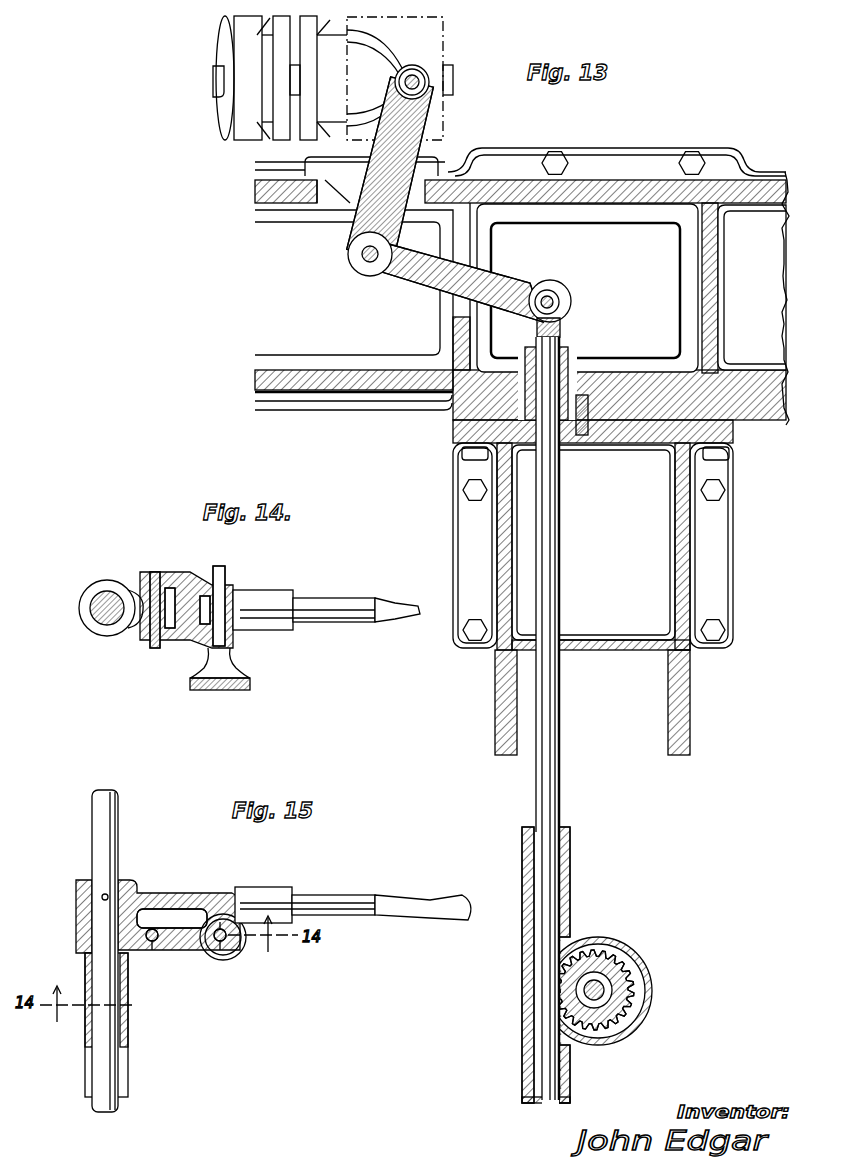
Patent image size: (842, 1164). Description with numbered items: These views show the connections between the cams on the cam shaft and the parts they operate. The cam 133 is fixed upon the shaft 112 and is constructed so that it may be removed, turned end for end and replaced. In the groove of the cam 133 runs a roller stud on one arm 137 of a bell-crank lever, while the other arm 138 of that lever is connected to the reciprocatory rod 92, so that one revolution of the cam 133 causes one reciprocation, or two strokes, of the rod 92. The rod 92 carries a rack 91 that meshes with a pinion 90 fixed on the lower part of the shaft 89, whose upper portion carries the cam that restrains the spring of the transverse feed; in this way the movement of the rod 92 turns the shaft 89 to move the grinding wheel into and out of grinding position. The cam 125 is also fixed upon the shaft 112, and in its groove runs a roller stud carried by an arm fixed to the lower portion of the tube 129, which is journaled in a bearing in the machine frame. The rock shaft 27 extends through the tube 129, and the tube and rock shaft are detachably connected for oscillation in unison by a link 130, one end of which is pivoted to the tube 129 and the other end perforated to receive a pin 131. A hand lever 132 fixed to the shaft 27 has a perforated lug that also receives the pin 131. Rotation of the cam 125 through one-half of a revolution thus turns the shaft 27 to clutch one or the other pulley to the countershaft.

In FIG. 13, the cam 125 is at (222, 20).
In FIG. 13, the cam 133 is at (446, 45).
In FIG. 13, the shaft 112 is at (446, 84).
In FIG. 13, the arm of bell-crank lever 137 is at (420, 122).
In FIG. 13, the arm of bell-crank lever 138 is at (505, 280).
In FIG. 13, the reciprocatory rod 92 is at (553, 782).
In FIG. 13, the pinion 90 is at (628, 970).
In FIG. 13, the shaft 89 is at (600, 991).
In FIG. 13, the rack 91 is at (562, 1066).
In FIG. 14, the tube 129 is at (84, 597).
In FIG. 15, the tube 129 is at (95, 1067).
In FIG. 14, the rock shaft 27 is at (112, 596).
In FIG. 15, the rock shaft 27 is at (122, 816).
In FIG. 14, the link 130 is at (188, 586).
In FIG. 15, the link 130 is at (180, 944).
In FIG. 14, the pin 131 is at (213, 692).
In FIG. 15, the pin 131 is at (222, 960).
In FIG. 14, the hand lever 132 is at (332, 600).
In FIG. 15, the hand lever 132 is at (410, 900).